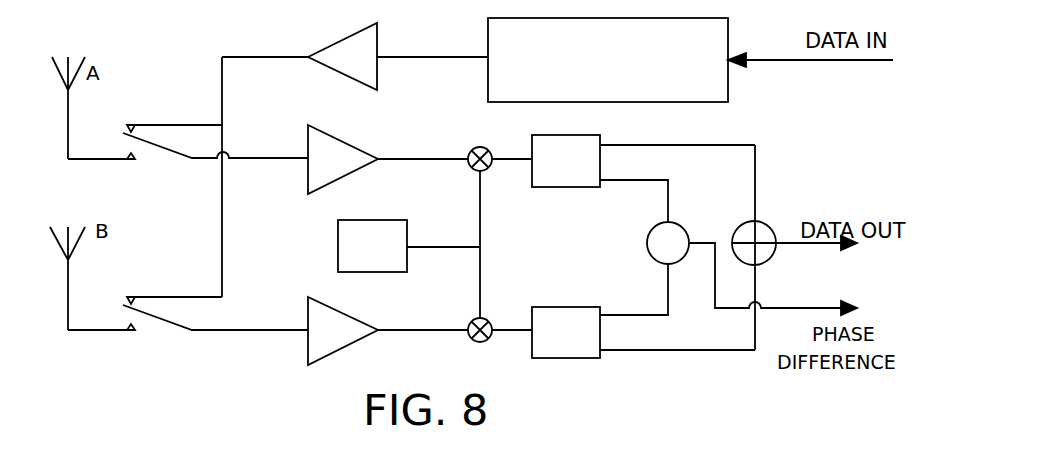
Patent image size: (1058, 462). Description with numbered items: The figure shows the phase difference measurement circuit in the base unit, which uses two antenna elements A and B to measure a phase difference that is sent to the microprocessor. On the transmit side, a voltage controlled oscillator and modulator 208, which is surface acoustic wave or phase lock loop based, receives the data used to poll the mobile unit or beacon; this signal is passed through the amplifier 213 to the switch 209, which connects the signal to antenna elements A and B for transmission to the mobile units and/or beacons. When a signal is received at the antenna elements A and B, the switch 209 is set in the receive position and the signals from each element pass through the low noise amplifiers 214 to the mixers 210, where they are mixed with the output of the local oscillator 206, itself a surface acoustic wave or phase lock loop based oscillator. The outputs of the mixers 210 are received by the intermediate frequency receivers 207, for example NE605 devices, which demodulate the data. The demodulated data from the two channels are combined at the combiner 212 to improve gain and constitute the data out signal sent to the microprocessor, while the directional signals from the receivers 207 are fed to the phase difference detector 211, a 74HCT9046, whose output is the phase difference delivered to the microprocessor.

The local oscillator 206 is at (409, 246).
The intermediate frequency receivers 207 is at (643, 246).
The voltage controlled oscillator and modulator 208 is at (608, 60).
The switch 209 is at (179, 193).
The mixers 210 is at (478, 253).
The phase difference detector 211 is at (731, 268).
The combiner 212 is at (794, 247).
The amplifier 213 is at (355, 56).
The low noise amplifiers 214 is at (388, 245).